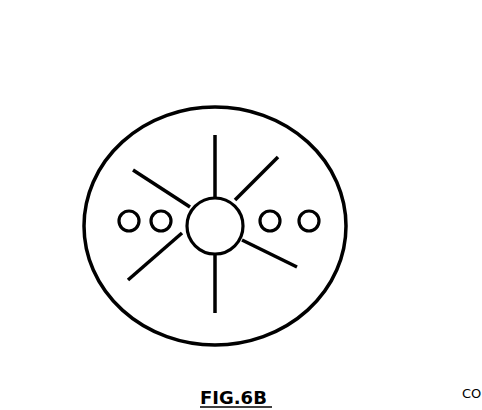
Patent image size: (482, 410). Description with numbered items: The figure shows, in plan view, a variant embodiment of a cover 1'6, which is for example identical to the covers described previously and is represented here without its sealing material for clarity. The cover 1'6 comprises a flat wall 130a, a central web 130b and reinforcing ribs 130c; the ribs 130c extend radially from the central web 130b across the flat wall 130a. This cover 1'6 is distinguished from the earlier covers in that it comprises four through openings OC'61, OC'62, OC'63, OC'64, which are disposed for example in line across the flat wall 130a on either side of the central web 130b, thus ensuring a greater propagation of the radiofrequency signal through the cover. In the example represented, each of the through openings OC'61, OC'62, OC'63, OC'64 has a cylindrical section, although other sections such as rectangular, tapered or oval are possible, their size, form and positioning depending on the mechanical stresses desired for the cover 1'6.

The cover 1'6 is at (238, 204).
The flat wall 130a is at (268, 132).
The central web 130b is at (203, 213).
The reinforcing ribs 130c is at (125, 177).
The through opening OC'61 is at (339, 232).
The through opening OC'62 is at (380, 221).
The through opening OC'63 is at (100, 241).
The through opening OC'64 is at (76, 216).